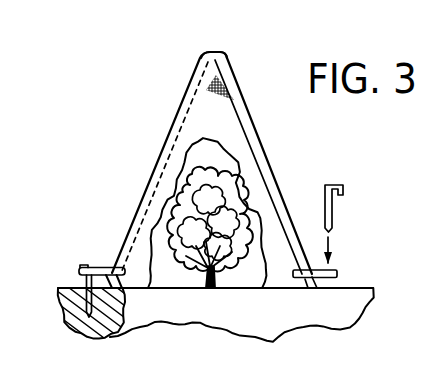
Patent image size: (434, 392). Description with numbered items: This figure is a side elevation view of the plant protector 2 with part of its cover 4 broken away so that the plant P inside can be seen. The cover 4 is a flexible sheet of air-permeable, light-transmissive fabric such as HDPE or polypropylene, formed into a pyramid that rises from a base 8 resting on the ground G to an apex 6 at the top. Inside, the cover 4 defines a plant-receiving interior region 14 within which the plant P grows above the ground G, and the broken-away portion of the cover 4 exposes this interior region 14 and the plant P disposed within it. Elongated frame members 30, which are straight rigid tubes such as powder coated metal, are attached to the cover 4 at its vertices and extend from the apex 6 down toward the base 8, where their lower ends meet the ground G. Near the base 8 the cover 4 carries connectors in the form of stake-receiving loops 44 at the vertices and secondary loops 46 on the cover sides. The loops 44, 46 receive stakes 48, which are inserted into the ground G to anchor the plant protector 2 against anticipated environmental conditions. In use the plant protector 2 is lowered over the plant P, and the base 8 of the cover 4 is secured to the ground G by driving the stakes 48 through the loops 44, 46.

The plant protector 2 is at (170, 76).
The cover 4 is at (188, 117).
The apex 6 is at (208, 52).
The base 8 is at (153, 325).
The plant-receiving interior region 14 is at (173, 195).
The frame members 30 is at (108, 294).
The stake-receiving loops 44 is at (337, 272).
The secondary loops 46 is at (108, 268).
The stakes 48 is at (82, 266).
The plant P is at (240, 197).
The ground G is at (370, 287).